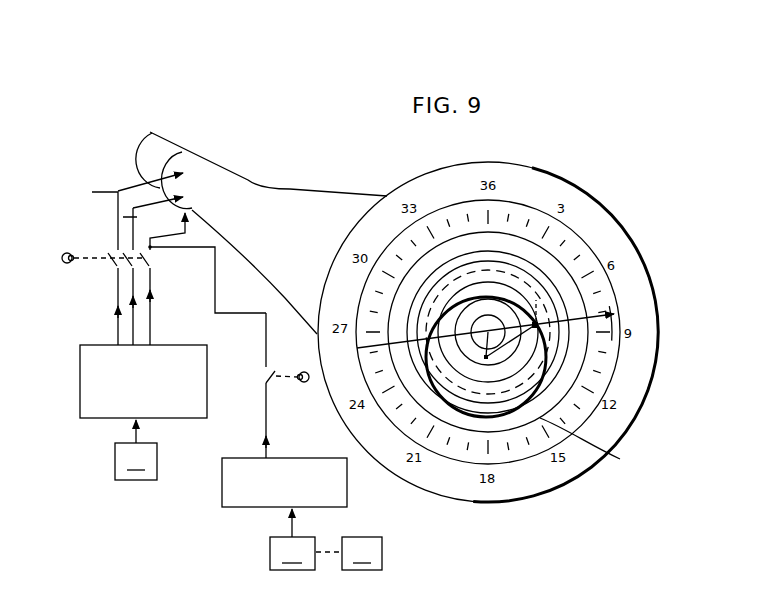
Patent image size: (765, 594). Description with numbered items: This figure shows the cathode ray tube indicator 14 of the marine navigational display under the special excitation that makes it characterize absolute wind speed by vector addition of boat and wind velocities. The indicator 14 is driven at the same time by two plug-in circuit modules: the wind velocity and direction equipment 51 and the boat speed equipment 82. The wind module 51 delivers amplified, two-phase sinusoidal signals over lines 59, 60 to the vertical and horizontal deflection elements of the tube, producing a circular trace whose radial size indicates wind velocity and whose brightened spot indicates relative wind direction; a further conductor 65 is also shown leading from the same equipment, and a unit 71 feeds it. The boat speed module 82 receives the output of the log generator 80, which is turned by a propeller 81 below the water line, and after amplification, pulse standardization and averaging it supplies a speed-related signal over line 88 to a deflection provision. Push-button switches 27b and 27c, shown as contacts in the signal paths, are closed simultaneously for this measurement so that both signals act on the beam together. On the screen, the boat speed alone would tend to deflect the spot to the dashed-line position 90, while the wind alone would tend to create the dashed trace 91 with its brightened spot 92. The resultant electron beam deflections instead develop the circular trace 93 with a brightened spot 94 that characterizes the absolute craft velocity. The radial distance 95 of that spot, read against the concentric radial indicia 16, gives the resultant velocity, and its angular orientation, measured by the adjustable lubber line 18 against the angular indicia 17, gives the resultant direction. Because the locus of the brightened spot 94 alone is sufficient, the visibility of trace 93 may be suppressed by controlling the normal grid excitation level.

The cathode ray tube device 14 is at (337, 200).
The radial indicia 16 is at (551, 276).
The angular indicia 17 is at (496, 214).
The lubber line 18 is at (589, 315).
The push-button switch 27b is at (63, 253).
The push-button switch 27c is at (309, 384).
The wind velocity and direction circuit module 51 is at (105, 418).
The line 59 is at (132, 320).
The line 60 is at (148, 313).
The wind signal wire 65 is at (117, 294).
The unit 71 is at (136, 450).
The log generator 80 is at (292, 539).
The propeller 81 is at (349, 553).
The boat speed circuit module 82 is at (347, 495).
The line 88 is at (266, 420).
The dashed-line spot position 90 is at (485, 361).
The trace 91 is at (497, 265).
The brightened spot 92 is at (538, 300).
The circular trace 93 is at (594, 444).
The brightened spot 94 is at (538, 328).
The radial distance 95 is at (516, 340).